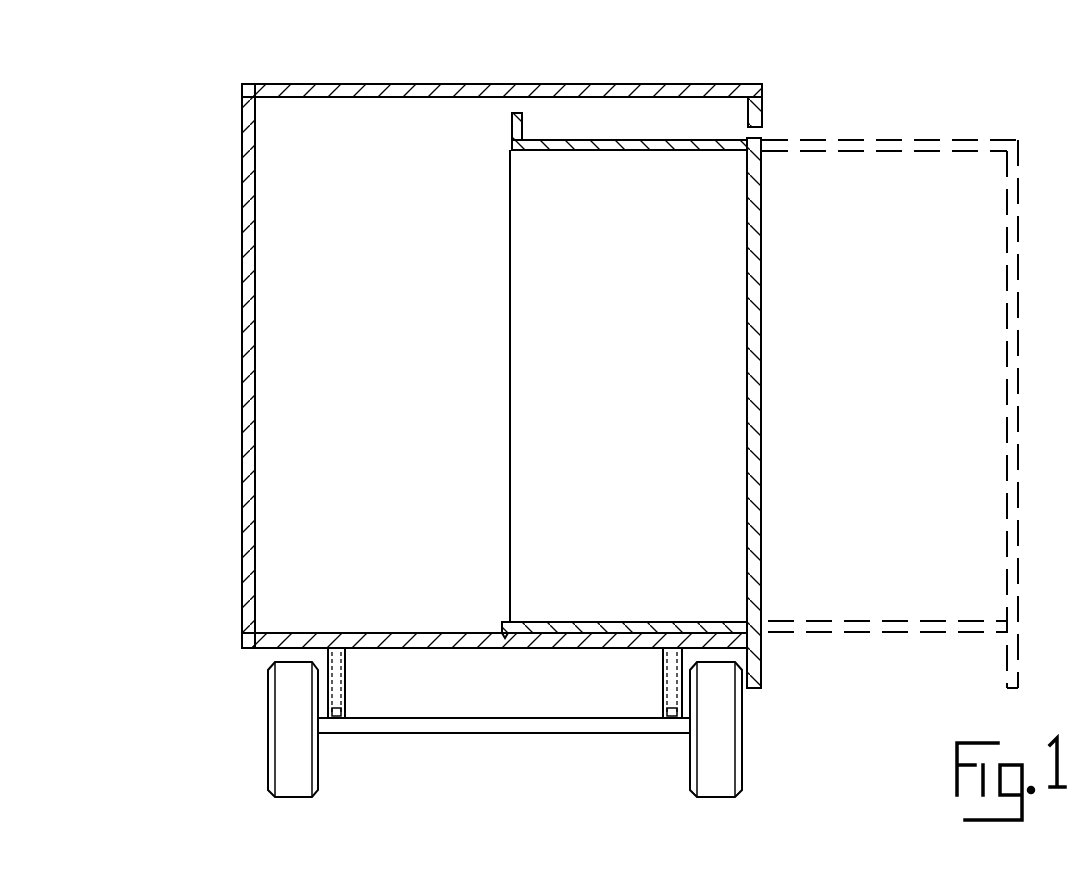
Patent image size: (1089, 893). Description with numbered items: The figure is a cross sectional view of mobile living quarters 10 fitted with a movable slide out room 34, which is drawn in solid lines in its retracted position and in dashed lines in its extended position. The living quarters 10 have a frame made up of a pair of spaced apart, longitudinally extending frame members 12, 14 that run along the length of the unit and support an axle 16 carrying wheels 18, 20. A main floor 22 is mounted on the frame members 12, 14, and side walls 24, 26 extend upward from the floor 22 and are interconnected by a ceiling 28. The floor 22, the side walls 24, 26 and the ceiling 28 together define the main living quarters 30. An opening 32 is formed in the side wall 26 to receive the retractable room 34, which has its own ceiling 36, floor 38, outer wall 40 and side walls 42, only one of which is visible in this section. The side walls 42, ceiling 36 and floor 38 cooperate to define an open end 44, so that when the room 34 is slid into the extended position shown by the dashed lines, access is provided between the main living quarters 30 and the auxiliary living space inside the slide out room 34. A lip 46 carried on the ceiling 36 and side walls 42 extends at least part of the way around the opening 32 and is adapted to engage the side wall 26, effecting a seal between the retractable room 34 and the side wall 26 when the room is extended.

The mobile living quarters 10 is at (792, 78).
The frame member 12 is at (343, 700).
The frame member 14 is at (667, 718).
The axle 16 is at (510, 723).
The wheel 18 is at (290, 748).
The wheel 20 is at (713, 782).
The main floor 22 is at (516, 640).
The side wall 24 is at (248, 418).
The side wall 26 is at (757, 108).
The ceiling 28 is at (550, 86).
The main living quarters 30 is at (387, 303).
The opening 32 is at (762, 142).
The slide out room 34 is at (815, 413).
The ceiling 36 is at (623, 150).
The floor 38 is at (623, 622).
The outer wall 40 is at (752, 436).
The side wall 42 is at (660, 393).
The open end 44 is at (510, 342).
The lip 46 is at (511, 130).